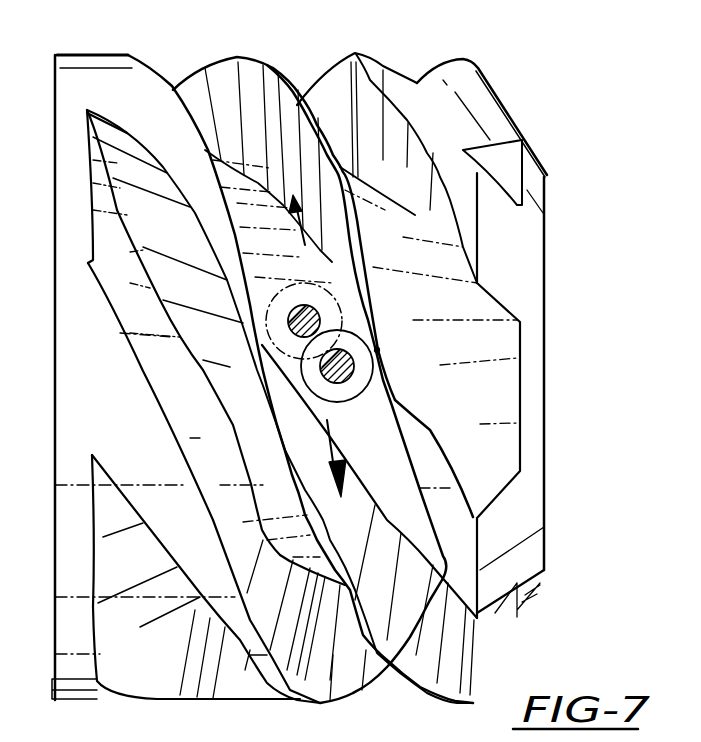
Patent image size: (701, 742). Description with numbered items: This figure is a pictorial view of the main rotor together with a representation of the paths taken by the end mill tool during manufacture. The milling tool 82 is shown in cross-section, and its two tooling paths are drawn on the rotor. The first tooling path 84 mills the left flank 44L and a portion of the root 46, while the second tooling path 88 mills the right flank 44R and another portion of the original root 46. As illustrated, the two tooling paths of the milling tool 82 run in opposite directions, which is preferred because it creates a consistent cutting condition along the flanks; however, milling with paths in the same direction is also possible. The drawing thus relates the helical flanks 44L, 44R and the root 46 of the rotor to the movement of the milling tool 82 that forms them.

The right flank 44R is at (274, 105).
The left flank 44L is at (330, 483).
The root 46 is at (370, 431).
The milling tool 82 is at (322, 315).
The first tooling path 84 is at (323, 433).
The second tooling path 88 is at (312, 260).